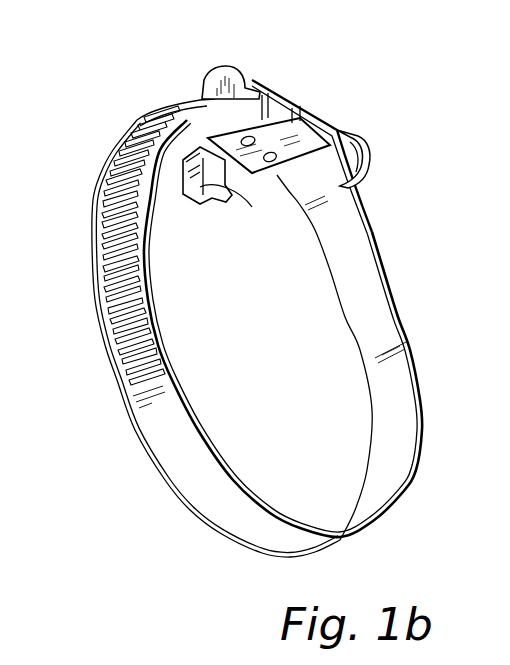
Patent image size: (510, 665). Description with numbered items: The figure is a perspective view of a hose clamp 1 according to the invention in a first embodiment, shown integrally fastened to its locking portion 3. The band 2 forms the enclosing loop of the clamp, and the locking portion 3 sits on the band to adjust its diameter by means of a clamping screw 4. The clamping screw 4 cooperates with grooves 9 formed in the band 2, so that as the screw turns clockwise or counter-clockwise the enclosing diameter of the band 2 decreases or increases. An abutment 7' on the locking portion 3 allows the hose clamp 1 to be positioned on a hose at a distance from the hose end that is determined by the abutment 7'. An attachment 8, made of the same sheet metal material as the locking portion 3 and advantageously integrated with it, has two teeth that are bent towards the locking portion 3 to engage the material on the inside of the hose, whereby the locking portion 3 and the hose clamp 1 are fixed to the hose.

The hose clamp 1 is at (368, 75).
The band 2 is at (380, 318).
The locking portion 3 is at (247, 86).
The clamping screw 4 is at (365, 174).
The abutment 7' is at (241, 202).
The attachment 8 is at (237, 229).
The grooves 9 is at (112, 203).